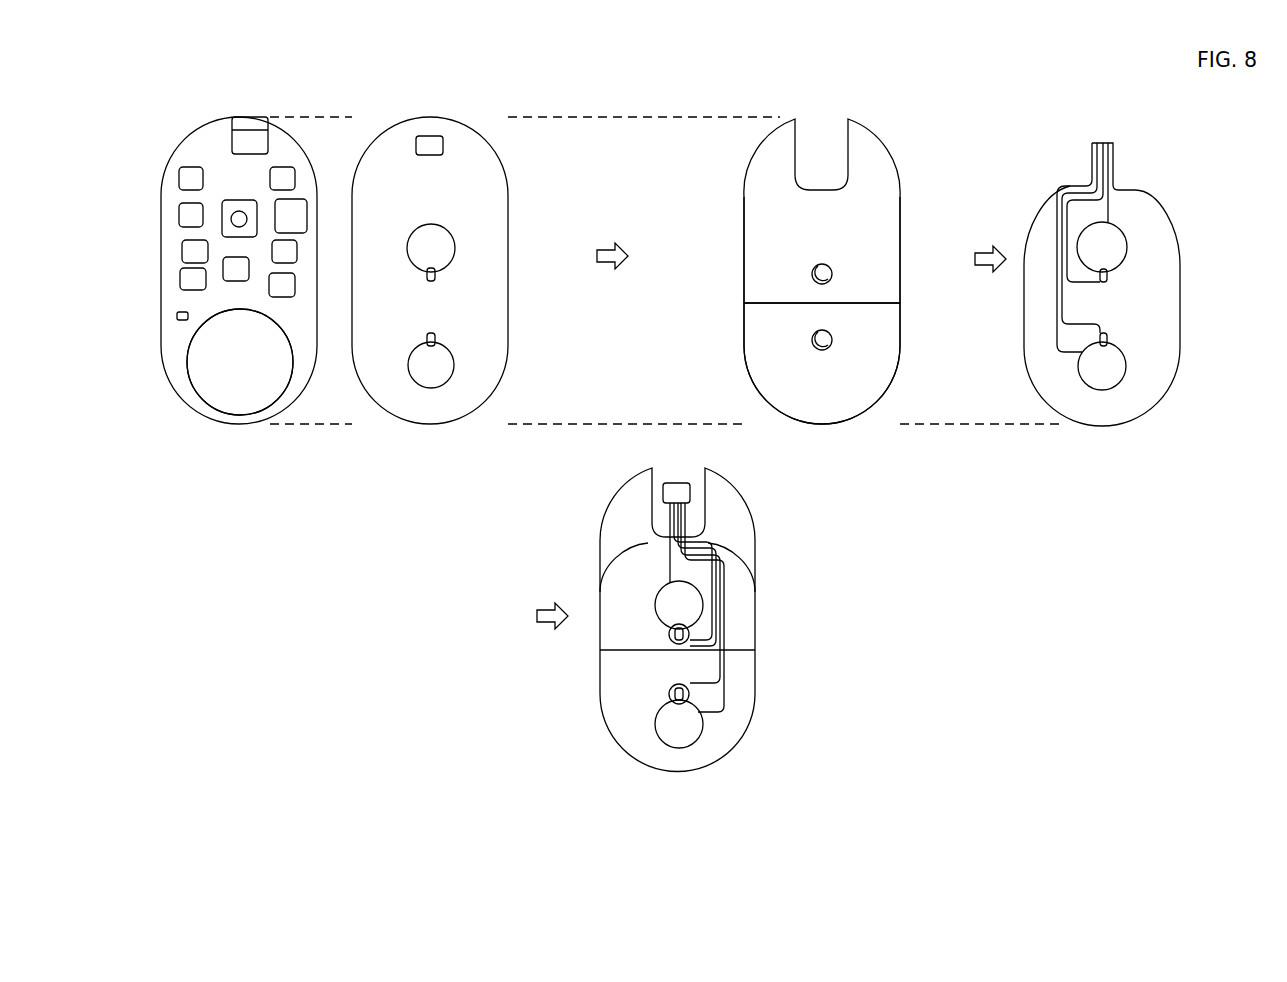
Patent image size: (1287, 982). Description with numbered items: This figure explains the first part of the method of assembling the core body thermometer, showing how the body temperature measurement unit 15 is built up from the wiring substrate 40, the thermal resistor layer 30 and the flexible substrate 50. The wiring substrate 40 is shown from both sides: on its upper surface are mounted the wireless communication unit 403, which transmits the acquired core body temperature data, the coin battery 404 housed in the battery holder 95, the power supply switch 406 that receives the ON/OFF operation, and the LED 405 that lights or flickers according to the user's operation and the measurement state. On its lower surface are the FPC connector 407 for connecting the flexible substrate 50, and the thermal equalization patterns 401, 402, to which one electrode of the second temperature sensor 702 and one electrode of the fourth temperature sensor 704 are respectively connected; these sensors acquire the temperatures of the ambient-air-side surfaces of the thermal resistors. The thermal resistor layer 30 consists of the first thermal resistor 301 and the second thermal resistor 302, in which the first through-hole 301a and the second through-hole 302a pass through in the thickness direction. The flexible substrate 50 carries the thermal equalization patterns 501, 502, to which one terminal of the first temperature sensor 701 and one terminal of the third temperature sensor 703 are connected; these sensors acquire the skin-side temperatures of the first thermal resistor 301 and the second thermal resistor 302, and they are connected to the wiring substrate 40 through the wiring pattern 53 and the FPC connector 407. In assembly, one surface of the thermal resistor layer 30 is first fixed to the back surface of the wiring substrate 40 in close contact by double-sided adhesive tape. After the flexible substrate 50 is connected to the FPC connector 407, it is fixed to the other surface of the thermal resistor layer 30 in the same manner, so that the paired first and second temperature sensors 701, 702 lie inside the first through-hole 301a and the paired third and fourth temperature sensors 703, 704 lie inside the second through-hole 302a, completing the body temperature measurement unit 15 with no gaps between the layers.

The body temperature measurement unit 15 is at (752, 621).
The thermal resistor layer 30 is at (672, 257).
The wiring substrate 40 is at (287, 123).
The flexible substrate 50 is at (1167, 212).
The wiring pattern 53 is at (1108, 215).
The battery holder 95 is at (202, 377).
The first thermal resistor 301 is at (760, 248).
The second thermal resistor 302 is at (763, 347).
The first through-hole 301a is at (826, 265).
The second through-hole 302a is at (827, 333).
The thermal equalization pattern 401 is at (447, 241).
The thermal equalization pattern 402 is at (447, 373).
The wireless communication unit 403 is at (237, 145).
The coin battery 404 is at (185, 363).
The LED 405 is at (176, 316).
The power supply switch 406 is at (228, 222).
The FPC connector 407 is at (444, 144).
The thermal equalization pattern 501 is at (1124, 247).
The thermal equalization pattern 502 is at (1122, 376).
The first temperature sensor 701 is at (1110, 276).
The second temperature sensor 702 is at (437, 274).
The third temperature sensor 703 is at (1110, 338).
The fourth temperature sensor 704 is at (437, 338).